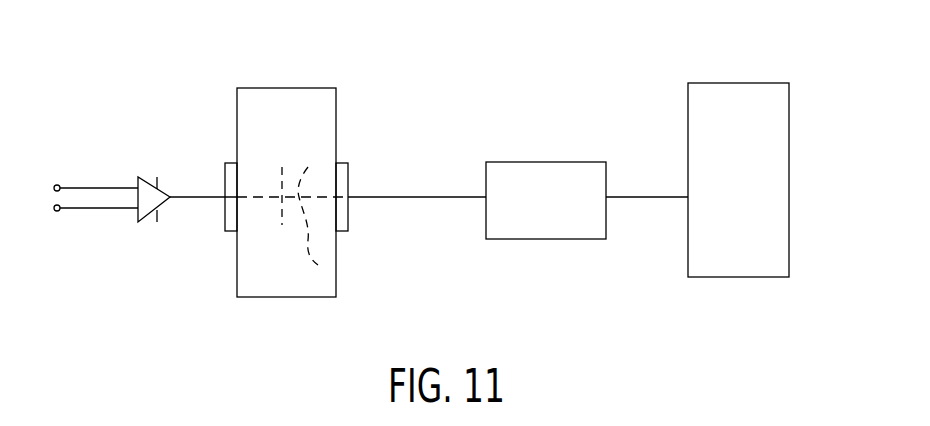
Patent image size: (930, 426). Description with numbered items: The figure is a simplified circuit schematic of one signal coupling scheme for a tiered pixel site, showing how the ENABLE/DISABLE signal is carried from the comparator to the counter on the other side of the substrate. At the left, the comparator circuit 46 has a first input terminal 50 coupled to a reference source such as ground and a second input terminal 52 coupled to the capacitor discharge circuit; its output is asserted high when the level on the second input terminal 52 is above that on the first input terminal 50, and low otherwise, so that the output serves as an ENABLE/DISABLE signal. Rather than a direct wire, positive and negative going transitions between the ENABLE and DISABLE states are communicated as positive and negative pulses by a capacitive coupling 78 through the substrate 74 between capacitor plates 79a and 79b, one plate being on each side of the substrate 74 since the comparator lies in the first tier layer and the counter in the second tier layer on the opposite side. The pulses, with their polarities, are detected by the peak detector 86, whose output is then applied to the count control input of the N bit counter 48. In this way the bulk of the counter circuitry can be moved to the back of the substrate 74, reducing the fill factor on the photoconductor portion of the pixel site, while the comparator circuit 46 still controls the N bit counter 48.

The first input terminal 50 is at (57, 184).
The second input terminal 52 is at (57, 212).
The comparator circuit 46 is at (166, 194).
The substrate 74 is at (288, 88).
The capacitor plate 79a is at (228, 163).
The capacitor plate 79b is at (348, 175).
The capacitive coupling 78 is at (318, 265).
The peak detector 86 is at (543, 162).
The N bit counter 48 is at (745, 83).